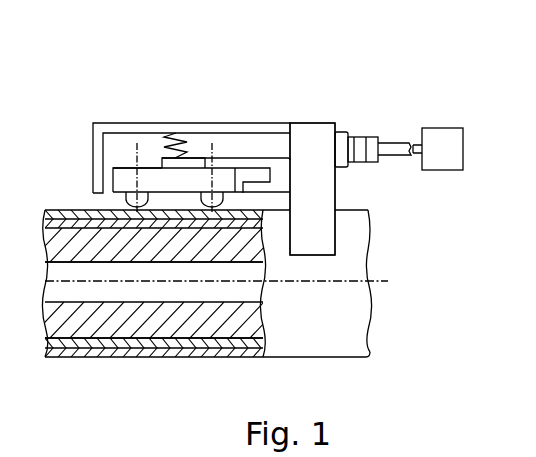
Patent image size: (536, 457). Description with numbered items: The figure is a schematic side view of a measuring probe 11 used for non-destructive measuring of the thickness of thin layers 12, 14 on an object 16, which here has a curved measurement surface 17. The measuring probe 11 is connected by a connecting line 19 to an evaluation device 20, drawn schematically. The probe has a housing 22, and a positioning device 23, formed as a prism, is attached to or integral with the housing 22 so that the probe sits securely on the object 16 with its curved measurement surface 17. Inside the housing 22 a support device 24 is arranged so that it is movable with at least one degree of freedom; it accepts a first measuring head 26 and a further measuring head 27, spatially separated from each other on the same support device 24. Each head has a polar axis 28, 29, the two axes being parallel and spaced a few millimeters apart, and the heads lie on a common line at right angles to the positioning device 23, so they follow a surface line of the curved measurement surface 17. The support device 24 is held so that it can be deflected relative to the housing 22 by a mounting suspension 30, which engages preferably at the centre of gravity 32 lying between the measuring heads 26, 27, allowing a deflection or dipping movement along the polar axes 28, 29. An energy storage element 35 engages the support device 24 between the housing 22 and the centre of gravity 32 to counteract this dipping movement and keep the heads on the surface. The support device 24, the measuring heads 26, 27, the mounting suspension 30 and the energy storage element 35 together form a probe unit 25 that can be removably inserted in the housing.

The measuring probe 11 is at (298, 90).
The thin layer 12 is at (122, 340).
The thin layer 14 is at (153, 352).
The object 16 is at (84, 330).
The curved measurement surface 17 is at (188, 358).
The connecting line 19 is at (398, 145).
The evaluation device 20 is at (438, 142).
The housing 22 is at (329, 112).
The positioning device 23 is at (320, 238).
The support device 24 is at (128, 183).
The probe unit 25 is at (139, 152).
The first measuring head 26 is at (112, 200).
The further measuring head 27 is at (234, 201).
The polar axis 28 is at (137, 163).
The polar axis 29 is at (238, 144).
The mounting suspension 30 is at (250, 120).
The centre of gravity 32 is at (167, 157).
The energy storage element 35 is at (196, 132).